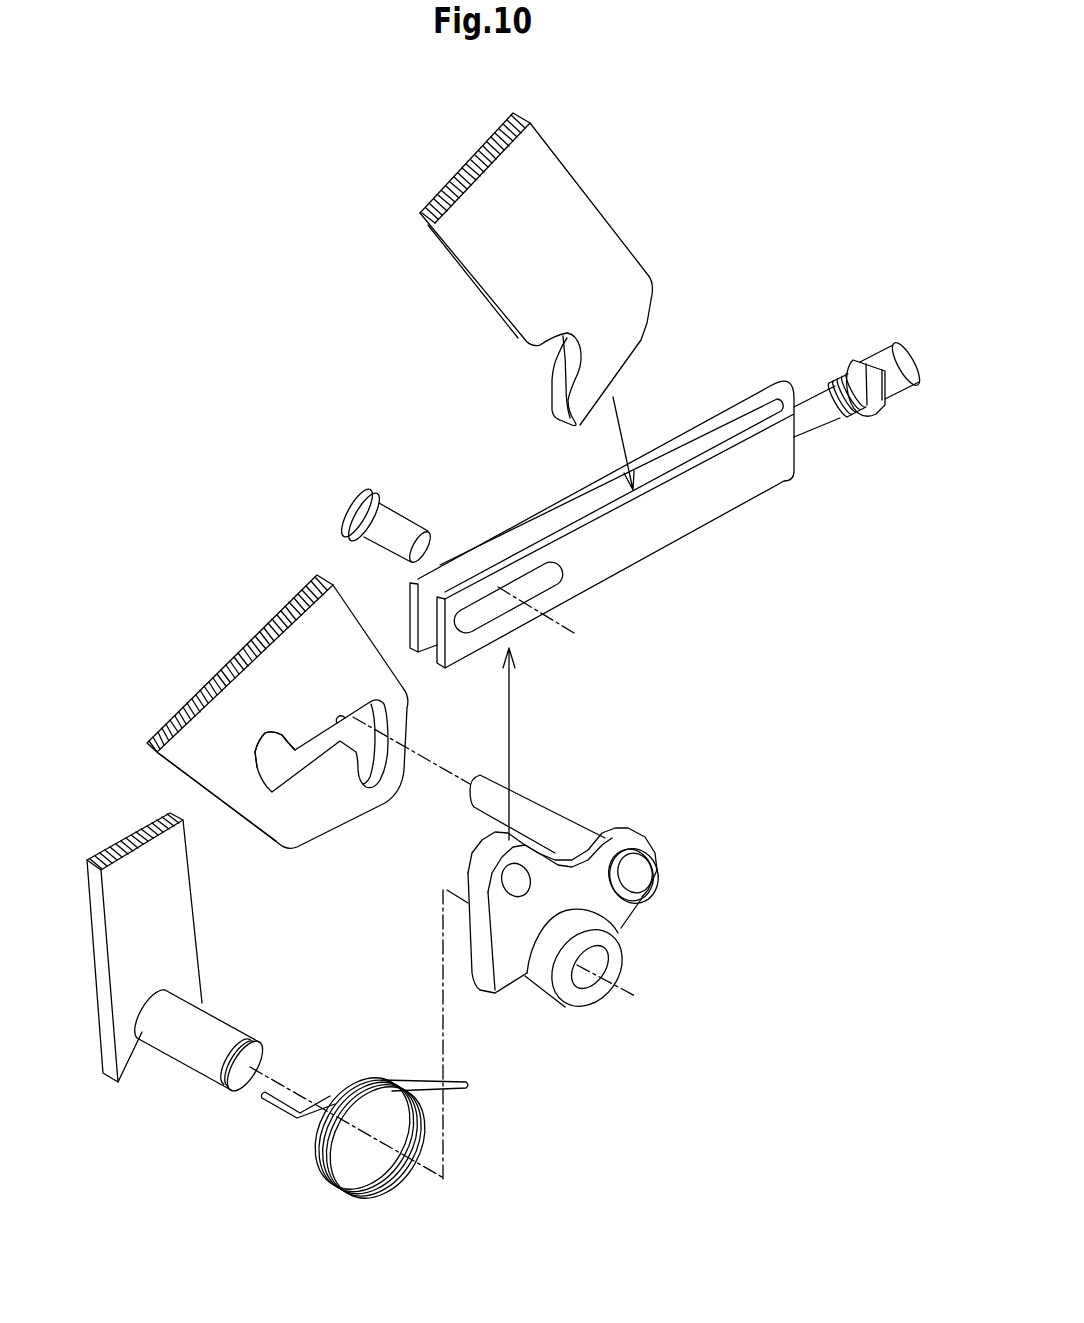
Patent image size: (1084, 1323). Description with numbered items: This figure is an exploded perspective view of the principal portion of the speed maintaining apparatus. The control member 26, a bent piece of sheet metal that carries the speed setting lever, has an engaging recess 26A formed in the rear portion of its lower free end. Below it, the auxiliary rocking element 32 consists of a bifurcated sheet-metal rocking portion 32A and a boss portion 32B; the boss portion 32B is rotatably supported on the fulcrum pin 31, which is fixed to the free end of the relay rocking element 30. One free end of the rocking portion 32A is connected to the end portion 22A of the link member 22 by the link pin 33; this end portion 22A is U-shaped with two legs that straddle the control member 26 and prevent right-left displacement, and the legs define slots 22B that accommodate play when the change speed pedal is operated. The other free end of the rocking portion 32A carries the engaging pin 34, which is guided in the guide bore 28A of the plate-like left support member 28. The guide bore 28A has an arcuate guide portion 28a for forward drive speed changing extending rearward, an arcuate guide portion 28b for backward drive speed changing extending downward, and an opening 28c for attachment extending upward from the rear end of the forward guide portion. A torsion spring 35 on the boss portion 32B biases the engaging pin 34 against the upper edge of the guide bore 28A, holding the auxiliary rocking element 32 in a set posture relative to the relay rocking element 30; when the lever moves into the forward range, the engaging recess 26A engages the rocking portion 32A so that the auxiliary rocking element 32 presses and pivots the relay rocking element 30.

The control member 26 is at (580, 178).
The engaging recess 26A is at (567, 350).
The link member 22 is at (684, 503).
The end portion of the link member 22A is at (703, 513).
The slots 22B is at (554, 589).
The link pin 33 is at (403, 520).
The left support member 28 is at (247, 812).
The guide bore 28A is at (322, 780).
The arcuate guide portion for forward drive speed changing 28a is at (340, 723).
The arcuate guide portion for backward drive speed changing 28b is at (378, 720).
The opening for attachment 28c is at (255, 752).
The engaging pin 34 is at (532, 793).
The auxiliary rocking element 32 is at (671, 854).
The rocking portion 32A is at (630, 912).
The boss portion 32B is at (595, 1000).
The relay rocking element 30 is at (97, 943).
The fulcrum pin 31 is at (197, 1062).
The torsion spring 35 is at (315, 1158).